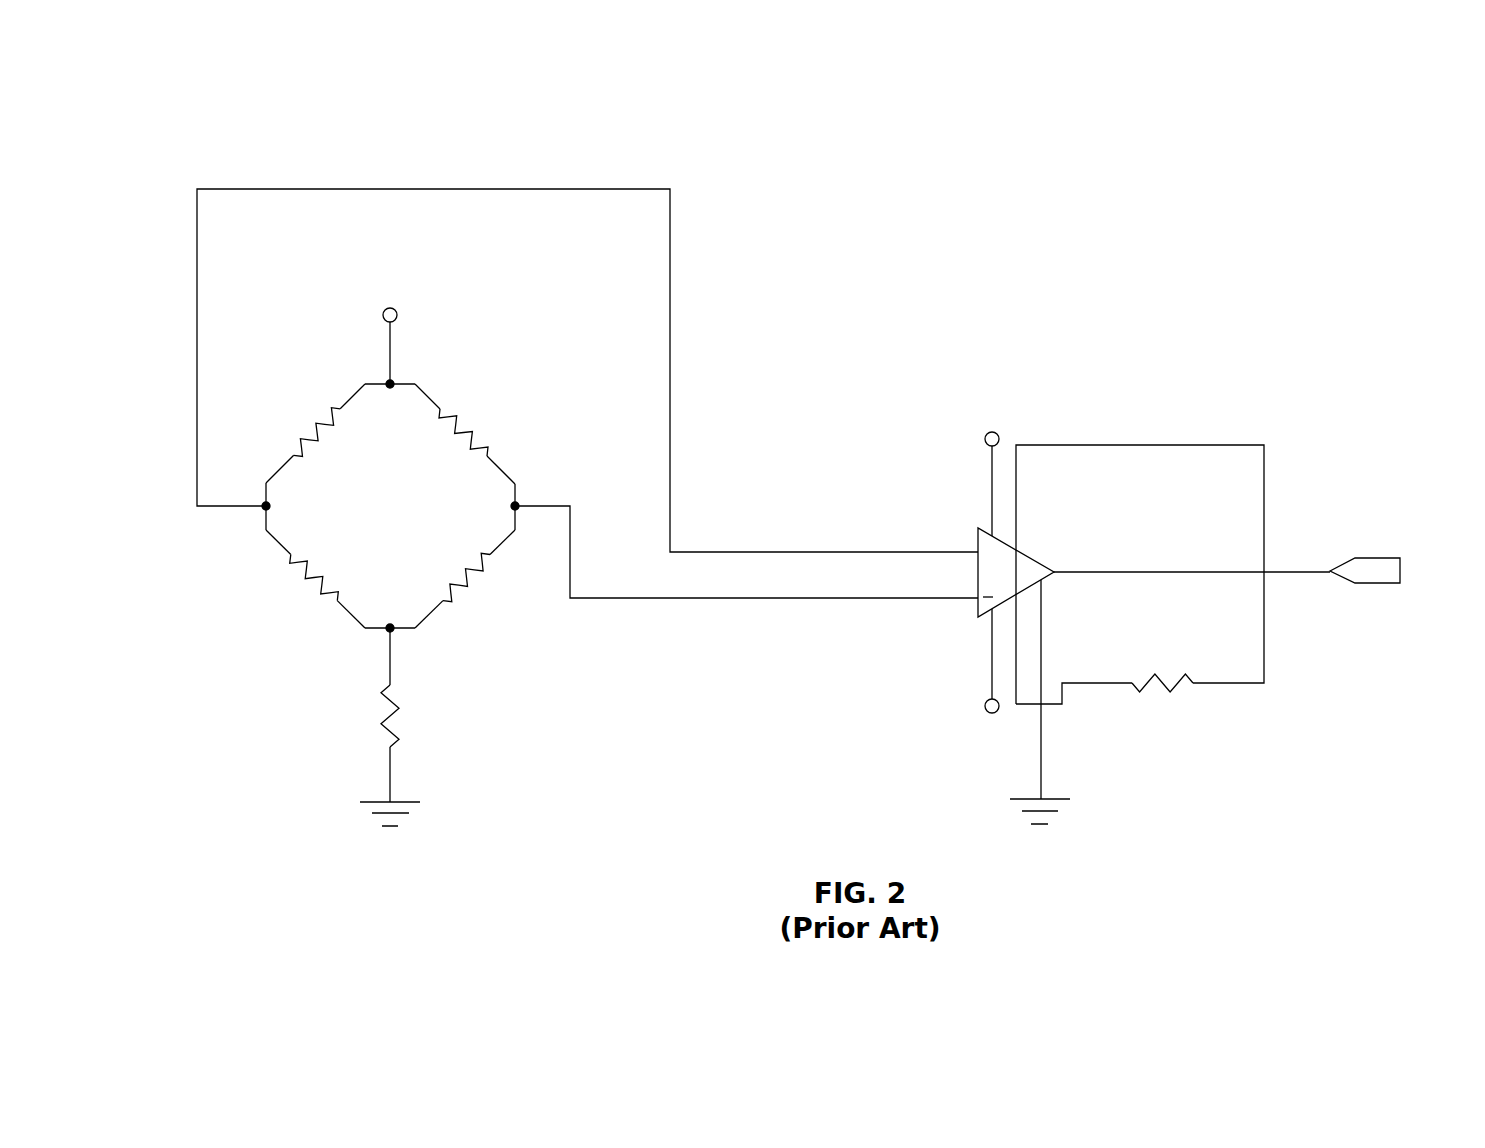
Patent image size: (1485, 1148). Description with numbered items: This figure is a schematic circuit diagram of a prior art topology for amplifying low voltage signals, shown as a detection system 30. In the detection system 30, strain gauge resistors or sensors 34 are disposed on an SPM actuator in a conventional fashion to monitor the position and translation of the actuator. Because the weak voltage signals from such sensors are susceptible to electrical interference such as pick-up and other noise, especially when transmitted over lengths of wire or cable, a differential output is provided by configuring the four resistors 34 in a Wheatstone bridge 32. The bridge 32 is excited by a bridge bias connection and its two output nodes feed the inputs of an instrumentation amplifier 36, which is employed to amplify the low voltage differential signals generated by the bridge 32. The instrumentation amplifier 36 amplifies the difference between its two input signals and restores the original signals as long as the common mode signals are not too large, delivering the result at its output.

The detection system 30 is at (203, 128).
The Wheatstone bridge 32 is at (513, 353).
The strain gauge resistors 34 is at (330, 412).
The instrumentation amplifier 36 is at (1237, 412).